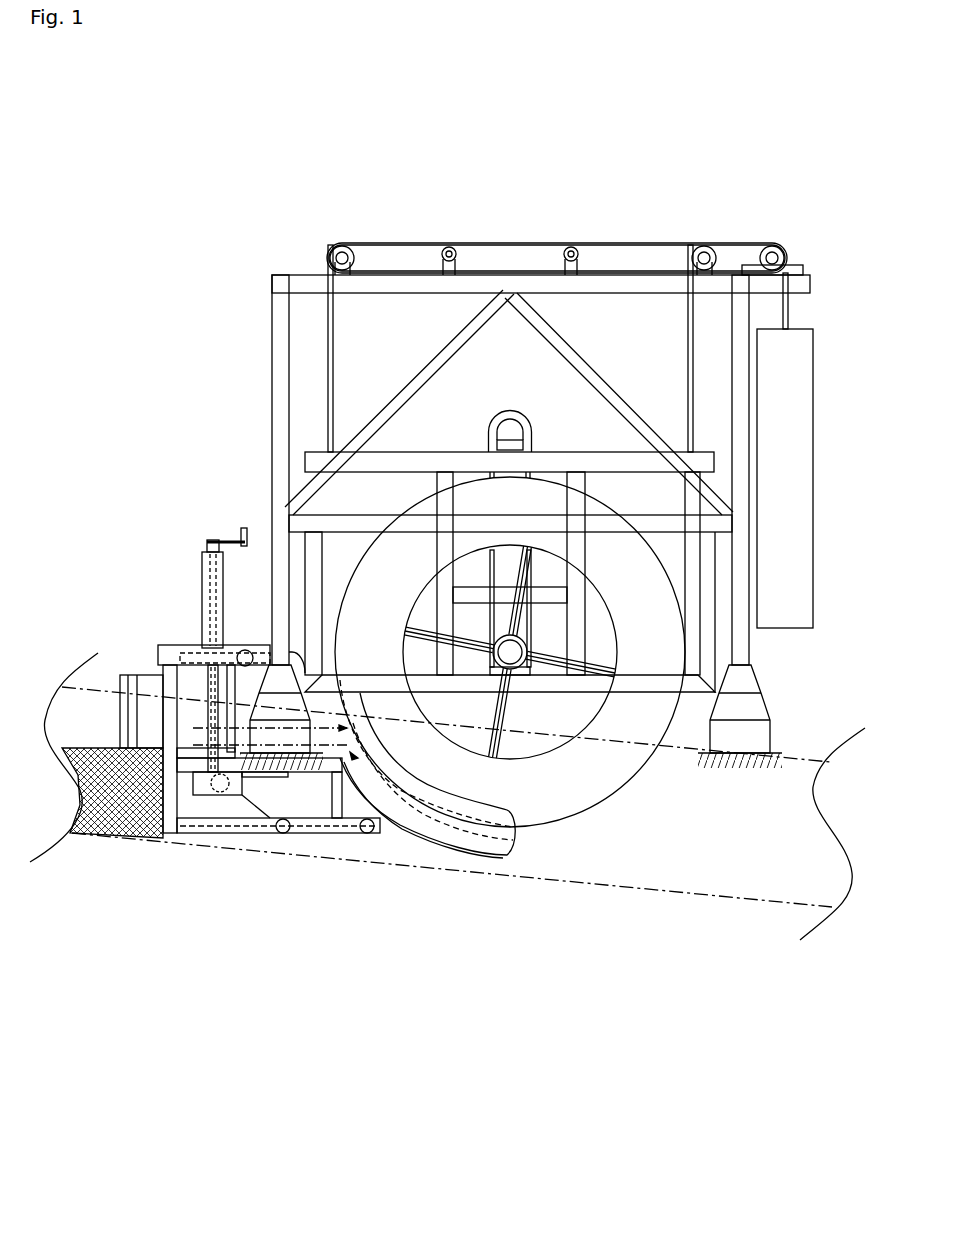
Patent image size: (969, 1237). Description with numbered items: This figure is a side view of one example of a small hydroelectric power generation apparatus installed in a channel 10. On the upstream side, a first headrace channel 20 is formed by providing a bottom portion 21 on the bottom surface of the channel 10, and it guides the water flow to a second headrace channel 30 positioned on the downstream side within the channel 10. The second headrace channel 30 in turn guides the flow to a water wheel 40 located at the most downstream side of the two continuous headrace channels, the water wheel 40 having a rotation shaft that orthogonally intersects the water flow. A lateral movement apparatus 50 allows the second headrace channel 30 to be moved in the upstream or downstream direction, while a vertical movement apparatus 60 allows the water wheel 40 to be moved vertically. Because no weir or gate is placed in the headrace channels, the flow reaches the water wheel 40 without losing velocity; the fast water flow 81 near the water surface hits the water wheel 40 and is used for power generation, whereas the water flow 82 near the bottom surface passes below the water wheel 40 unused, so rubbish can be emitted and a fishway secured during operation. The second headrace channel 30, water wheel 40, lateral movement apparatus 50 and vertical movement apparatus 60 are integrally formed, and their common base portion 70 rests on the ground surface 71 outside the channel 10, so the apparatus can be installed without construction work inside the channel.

The channel 10 is at (468, 870).
The first headrace channel 20 is at (97, 738).
The bottom portion 21 is at (138, 805).
The second headrace channel 30 is at (242, 738).
The water wheel 40 is at (612, 800).
The lateral movement apparatus 50 is at (220, 540).
The vertical movement apparatus 60 is at (640, 242).
The base portion 70 is at (283, 768).
The ground surface 71 is at (303, 768).
The water flow near the water surface 81 is at (342, 750).
The water flow near the bottom surface 82 is at (378, 822).